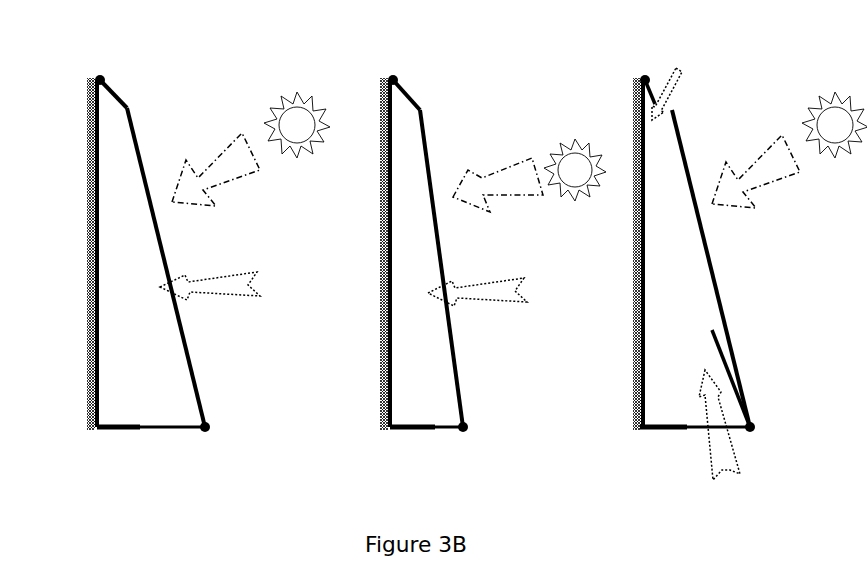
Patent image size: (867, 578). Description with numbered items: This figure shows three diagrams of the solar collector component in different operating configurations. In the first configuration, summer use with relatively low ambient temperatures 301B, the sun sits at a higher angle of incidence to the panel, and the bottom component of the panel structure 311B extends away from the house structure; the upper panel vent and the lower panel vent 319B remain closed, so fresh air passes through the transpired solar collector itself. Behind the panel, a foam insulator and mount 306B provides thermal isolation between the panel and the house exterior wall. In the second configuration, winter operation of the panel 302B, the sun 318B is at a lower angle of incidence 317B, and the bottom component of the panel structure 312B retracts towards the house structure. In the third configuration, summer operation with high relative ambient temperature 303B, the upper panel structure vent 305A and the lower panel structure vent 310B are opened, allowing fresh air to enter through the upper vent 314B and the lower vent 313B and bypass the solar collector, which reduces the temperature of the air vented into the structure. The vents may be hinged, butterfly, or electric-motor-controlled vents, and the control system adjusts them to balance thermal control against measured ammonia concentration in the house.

The summer low ambient temperature operation configuration 301B is at (158, 45).
The winter operation configuration 302B is at (451, 53).
The summer high ambient temperature operation configuration 303B is at (776, 61).
The upper edge of support wall 305A is at (643, 97).
The foam insulator and mount 306B is at (91, 181).
The lower panel structure vent 310B is at (728, 356).
The bottom component of the panel structure 311B is at (131, 433).
The bottom component of the panel structure 312B is at (441, 432).
The lower vent 313B is at (713, 457).
The upper vent 314B is at (676, 96).
The lower angle of incidence 317B is at (521, 163).
The sun 318B is at (575, 139).
The lower panel vent 319B is at (181, 431).